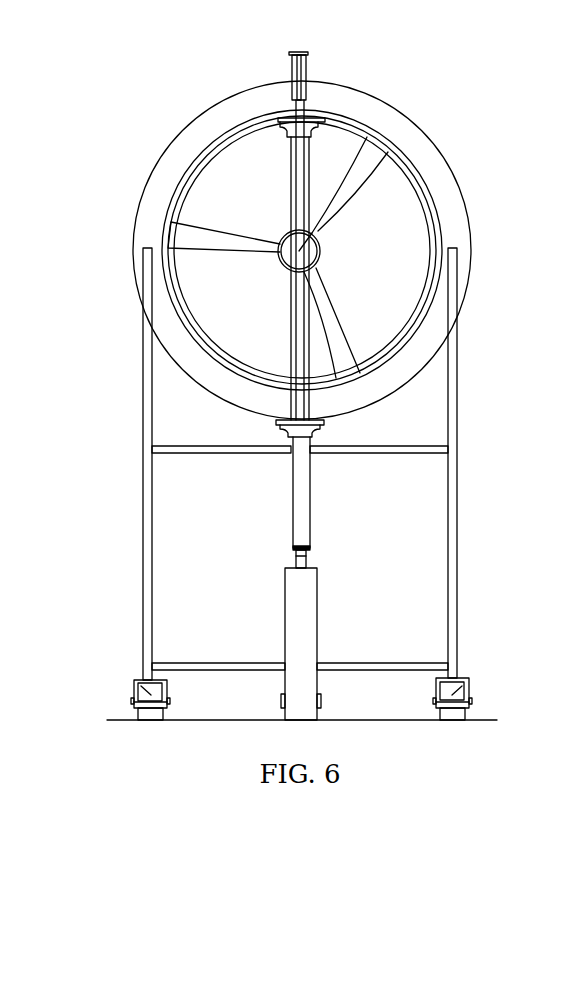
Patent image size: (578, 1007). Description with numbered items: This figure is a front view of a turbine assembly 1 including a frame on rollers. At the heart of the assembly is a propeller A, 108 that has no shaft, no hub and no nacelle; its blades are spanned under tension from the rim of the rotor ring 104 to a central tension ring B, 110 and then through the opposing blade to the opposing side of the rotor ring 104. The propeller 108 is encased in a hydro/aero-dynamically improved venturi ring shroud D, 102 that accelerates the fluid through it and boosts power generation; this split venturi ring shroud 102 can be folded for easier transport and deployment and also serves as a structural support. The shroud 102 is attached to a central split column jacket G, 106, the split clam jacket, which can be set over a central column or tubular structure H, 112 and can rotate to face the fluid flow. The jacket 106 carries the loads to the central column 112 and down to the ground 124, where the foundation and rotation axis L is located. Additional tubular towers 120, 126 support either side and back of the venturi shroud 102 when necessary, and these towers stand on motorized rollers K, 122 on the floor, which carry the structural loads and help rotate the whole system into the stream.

The fan assembly 1 is at (451, 408).
The venturi ring shroud 102 is at (417, 140).
The rotor ring 104 is at (403, 337).
The central split column jacket 106 is at (270, 82).
The propeller 108 is at (203, 236).
The central tension ring 110 is at (321, 247).
The central column or tubular structure 112 is at (309, 550).
The tubular tower 120 is at (150, 527).
The motorized rollers 122 is at (140, 681).
The ground 124 is at (490, 719).
The right support post 126 is at (456, 523).
The propeller A is at (278, 257).
The tension ring B is at (333, 253).
The split venturi ring shroud D is at (303, 250).
The split clam jacket G is at (288, 73).
The central structural column or cable H is at (308, 53).
The motorized rollers K is at (437, 680).
The foundation and rotation axis L is at (300, 637).